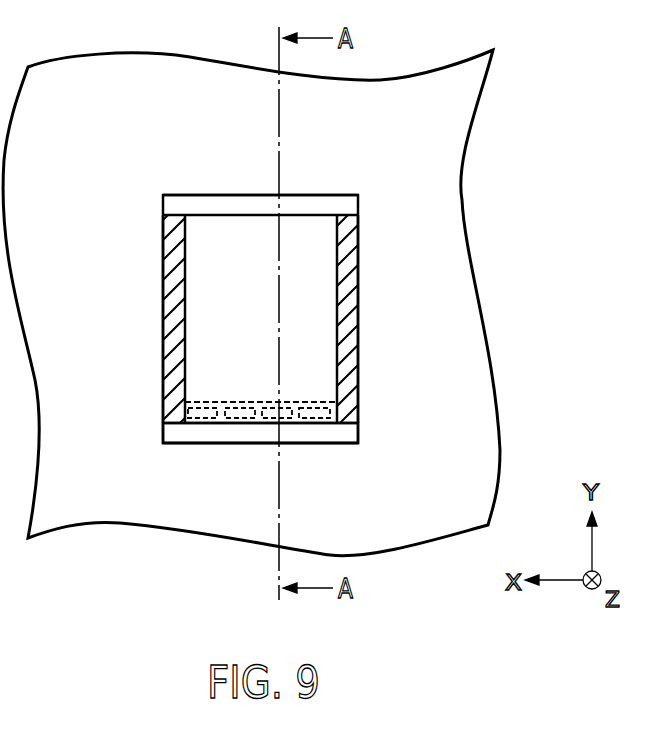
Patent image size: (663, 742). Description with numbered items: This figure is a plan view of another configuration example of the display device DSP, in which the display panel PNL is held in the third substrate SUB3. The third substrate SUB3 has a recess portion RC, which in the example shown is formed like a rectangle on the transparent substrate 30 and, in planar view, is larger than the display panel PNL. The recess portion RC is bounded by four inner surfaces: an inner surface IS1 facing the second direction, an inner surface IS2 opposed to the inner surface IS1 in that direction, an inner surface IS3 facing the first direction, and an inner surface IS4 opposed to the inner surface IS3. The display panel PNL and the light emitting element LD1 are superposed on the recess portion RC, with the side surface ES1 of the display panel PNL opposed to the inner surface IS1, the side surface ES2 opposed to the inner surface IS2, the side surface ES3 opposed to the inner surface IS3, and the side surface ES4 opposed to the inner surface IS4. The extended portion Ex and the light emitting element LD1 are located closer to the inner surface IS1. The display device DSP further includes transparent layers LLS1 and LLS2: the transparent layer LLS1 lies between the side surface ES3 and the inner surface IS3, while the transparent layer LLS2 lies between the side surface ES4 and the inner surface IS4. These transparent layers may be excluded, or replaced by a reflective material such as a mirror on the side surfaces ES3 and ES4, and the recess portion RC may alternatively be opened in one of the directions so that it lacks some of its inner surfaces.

The display device DSP is at (520, 95).
The third substrate SUB3 is at (494, 276).
The transparent substrate 30 is at (452, 168).
The display panel PNL is at (227, 206).
The recess portion RC is at (336, 187).
The side surface ES2 is at (304, 200).
The inner surface IS2 is at (204, 212).
The transparent layer LLS2 is at (168, 248).
The side surface ES4 is at (166, 357).
The inner surface IS4 is at (168, 308).
The transparent layer LLS1 is at (346, 250).
The side surface ES3 is at (352, 347).
The inner surface IS3 is at (352, 297).
The inner surface IS1 is at (202, 426).
The extended portion Ex is at (322, 437).
The side surface ES1 is at (264, 437).
The light emitting element LD1 is at (238, 420).